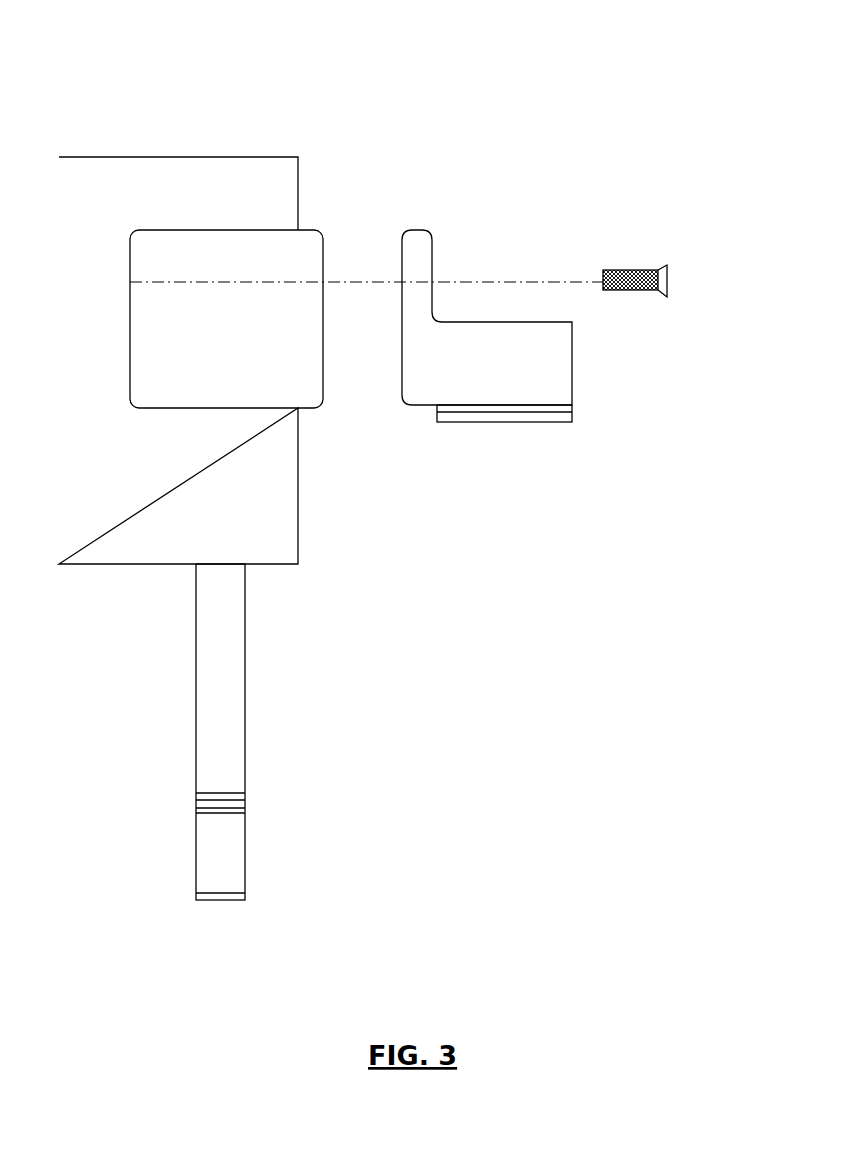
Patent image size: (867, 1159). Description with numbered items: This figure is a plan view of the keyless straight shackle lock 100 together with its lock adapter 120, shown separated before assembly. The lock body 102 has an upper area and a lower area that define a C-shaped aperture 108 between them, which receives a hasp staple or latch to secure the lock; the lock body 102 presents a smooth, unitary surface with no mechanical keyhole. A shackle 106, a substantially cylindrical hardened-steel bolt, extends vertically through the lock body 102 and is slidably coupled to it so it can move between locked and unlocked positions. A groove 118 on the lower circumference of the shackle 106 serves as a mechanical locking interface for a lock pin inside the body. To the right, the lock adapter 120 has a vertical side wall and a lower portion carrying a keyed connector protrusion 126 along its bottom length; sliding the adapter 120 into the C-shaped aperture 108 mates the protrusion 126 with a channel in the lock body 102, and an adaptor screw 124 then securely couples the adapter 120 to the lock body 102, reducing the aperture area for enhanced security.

The keyless straight shackle lock 100 is at (84, 70).
The lock body 102 is at (166, 153).
The shackle 106 is at (209, 915).
The C-shaped aperture 108 is at (324, 372).
The groove 118 is at (243, 802).
The lock adapter 120 is at (580, 366).
The adaptor screw 124 is at (683, 282).
The connector protrusion 126 is at (488, 428).